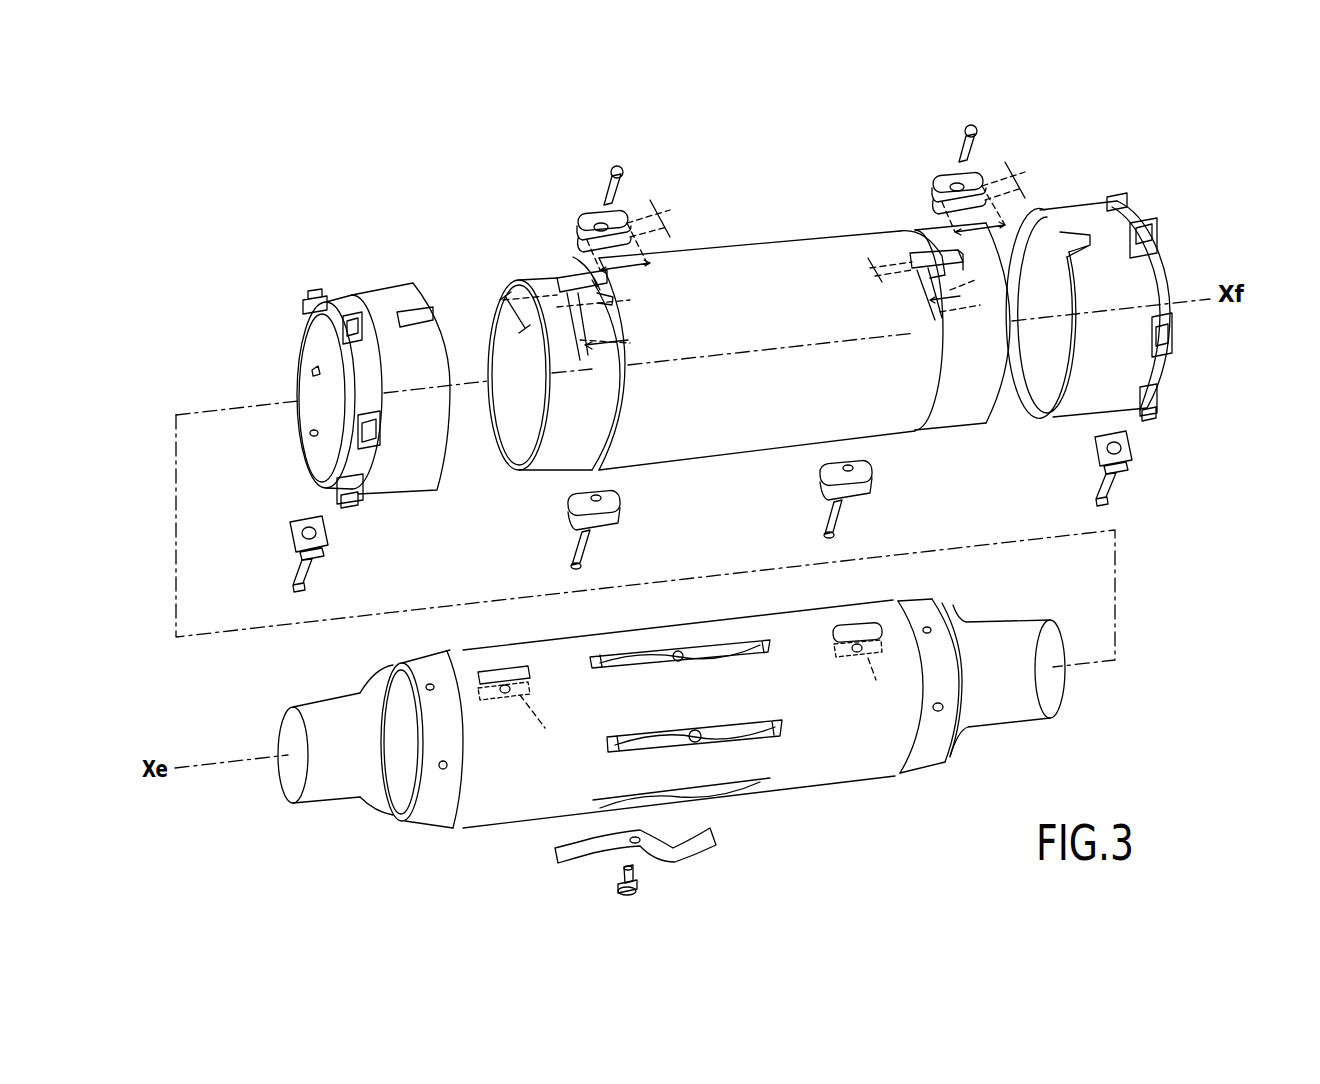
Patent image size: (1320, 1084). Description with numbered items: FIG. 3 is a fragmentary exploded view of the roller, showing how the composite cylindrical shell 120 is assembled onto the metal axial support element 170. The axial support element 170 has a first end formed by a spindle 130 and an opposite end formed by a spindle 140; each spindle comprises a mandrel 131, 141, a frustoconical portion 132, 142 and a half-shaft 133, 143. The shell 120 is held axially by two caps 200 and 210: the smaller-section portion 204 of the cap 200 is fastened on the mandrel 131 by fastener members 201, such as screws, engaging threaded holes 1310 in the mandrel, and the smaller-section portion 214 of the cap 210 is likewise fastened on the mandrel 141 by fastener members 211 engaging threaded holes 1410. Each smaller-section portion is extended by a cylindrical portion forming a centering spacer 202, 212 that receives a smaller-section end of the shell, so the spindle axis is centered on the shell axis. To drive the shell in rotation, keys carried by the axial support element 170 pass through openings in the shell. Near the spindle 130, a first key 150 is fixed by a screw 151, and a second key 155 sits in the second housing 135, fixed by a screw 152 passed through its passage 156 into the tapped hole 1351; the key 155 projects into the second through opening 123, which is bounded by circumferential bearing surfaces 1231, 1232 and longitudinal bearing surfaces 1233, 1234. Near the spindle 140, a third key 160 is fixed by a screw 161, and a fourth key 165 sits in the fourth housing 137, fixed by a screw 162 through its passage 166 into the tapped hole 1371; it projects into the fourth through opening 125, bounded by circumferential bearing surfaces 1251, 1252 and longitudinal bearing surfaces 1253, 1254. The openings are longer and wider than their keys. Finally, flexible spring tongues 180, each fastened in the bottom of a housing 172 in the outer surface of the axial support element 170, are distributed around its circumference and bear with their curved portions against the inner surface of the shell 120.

The cylindrical shell 120 is at (746, 250).
The second through opening 123 is at (913, 312).
The first circumferential bearing surface 1231 is at (930, 242).
The second circumferential bearing surface 1232 is at (925, 300).
The first longitudinal bearing surface 1233 is at (900, 236).
The second longitudinal bearing surface 1234 is at (958, 270).
The fourth through opening 125 is at (563, 351).
The first circumferential bearing surface 1251 is at (585, 288).
The second circumferential bearing surface 1252 is at (583, 340).
The first longitudinal bearing surface 1253 is at (540, 288).
The second longitudinal bearing surface 1254 is at (612, 302).
The spindle 130 is at (981, 691).
The mandrel 131 is at (912, 605).
The frustoconical portion 132 is at (985, 665).
The half-shaft 133 is at (1005, 625).
The threaded holes 1310 is at (938, 707).
The second housing 135 is at (855, 632).
The hole 1351 is at (879, 681).
The fourth housing 137 is at (515, 665).
The hole 1371 is at (542, 724).
The spindle 140 is at (370, 767).
The mandrel 141 is at (387, 722).
The threaded holes 1410 is at (443, 765).
The frustoconical portion 142 is at (400, 810).
The half-shaft 143 is at (318, 712).
The first key 150 is at (868, 482).
The screw 151 is at (843, 520).
The screw 152 is at (972, 125).
The second key 155 is at (978, 200).
The passage 156 is at (955, 182).
The third key 160 is at (615, 510).
The screw 161 is at (590, 545).
The screw 162 is at (618, 165).
The fourth key 165 is at (622, 239).
The passage 166 is at (600, 222).
The axial support element 170 is at (863, 765).
The housing 172 is at (755, 640).
The flexible spring tongues 180 is at (755, 722).
The cap 200 is at (1114, 320).
The fastener members 201 is at (1150, 216).
The centering spacer 202 is at (1080, 412).
The smaller-section portion 204 is at (1162, 366).
The cap 210 is at (370, 411).
The fastener members 211 is at (317, 288).
The centering spacer 212 is at (372, 293).
The smaller-section portion 214 is at (363, 385).